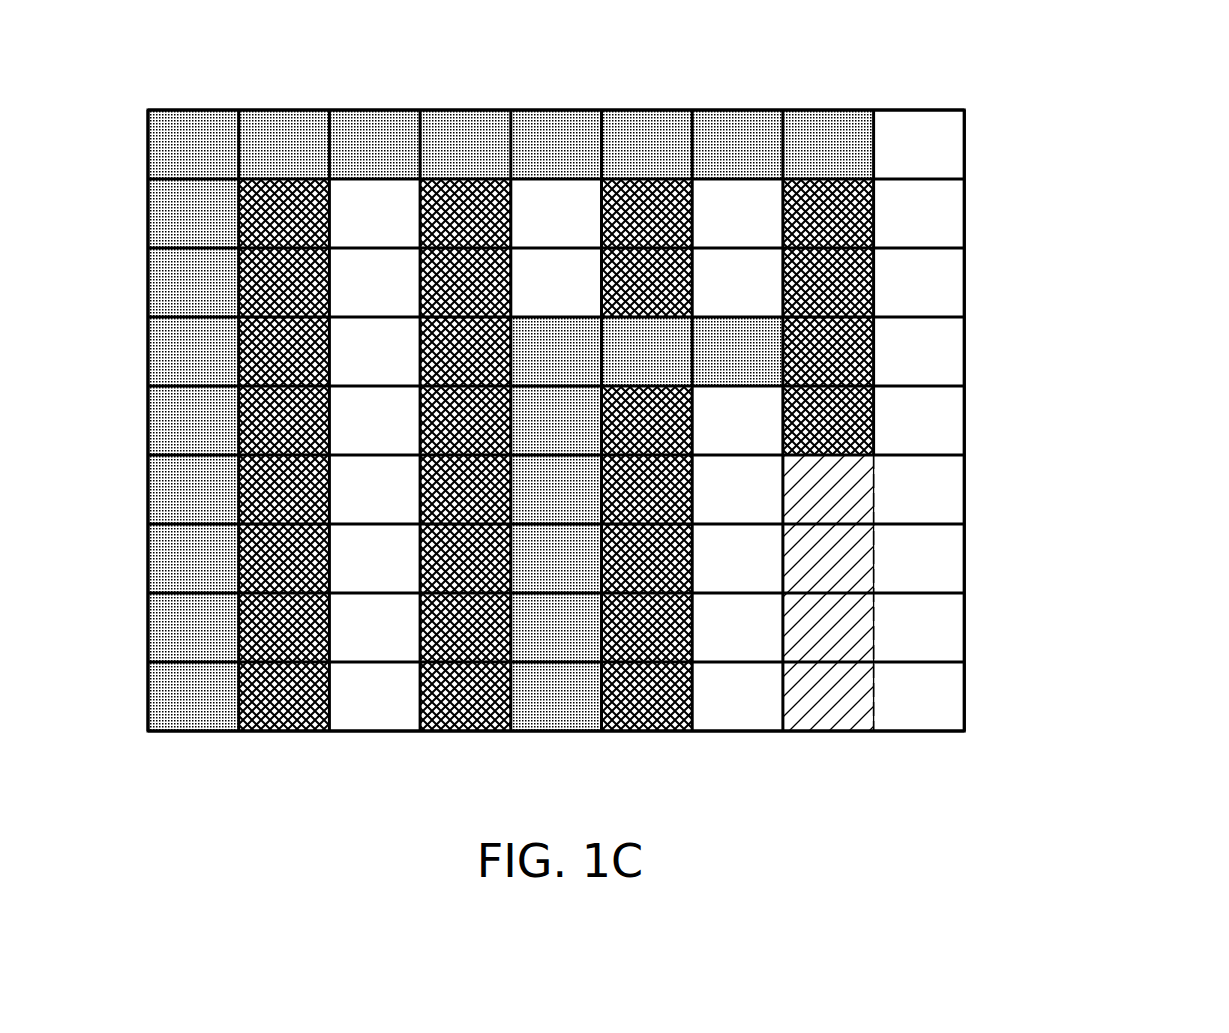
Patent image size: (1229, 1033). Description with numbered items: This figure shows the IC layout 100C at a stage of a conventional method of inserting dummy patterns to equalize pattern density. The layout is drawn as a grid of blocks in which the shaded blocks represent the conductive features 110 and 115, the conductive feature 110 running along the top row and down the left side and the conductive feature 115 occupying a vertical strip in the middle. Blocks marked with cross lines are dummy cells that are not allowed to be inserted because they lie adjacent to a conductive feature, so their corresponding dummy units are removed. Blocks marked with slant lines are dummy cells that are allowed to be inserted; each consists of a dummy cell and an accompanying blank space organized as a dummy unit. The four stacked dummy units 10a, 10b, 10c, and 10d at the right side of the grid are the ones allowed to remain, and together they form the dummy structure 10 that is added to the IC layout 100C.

The IC layout 100C is at (1078, 103).
The conductive feature 110 is at (652, 122).
The conductive feature 115 is at (559, 712).
The dummy structure 10 is at (953, 593).
The dummy unit 10a is at (918, 696).
The dummy unit 10b is at (940, 631).
The dummy unit 10c is at (940, 563).
The dummy unit 10d is at (940, 494).